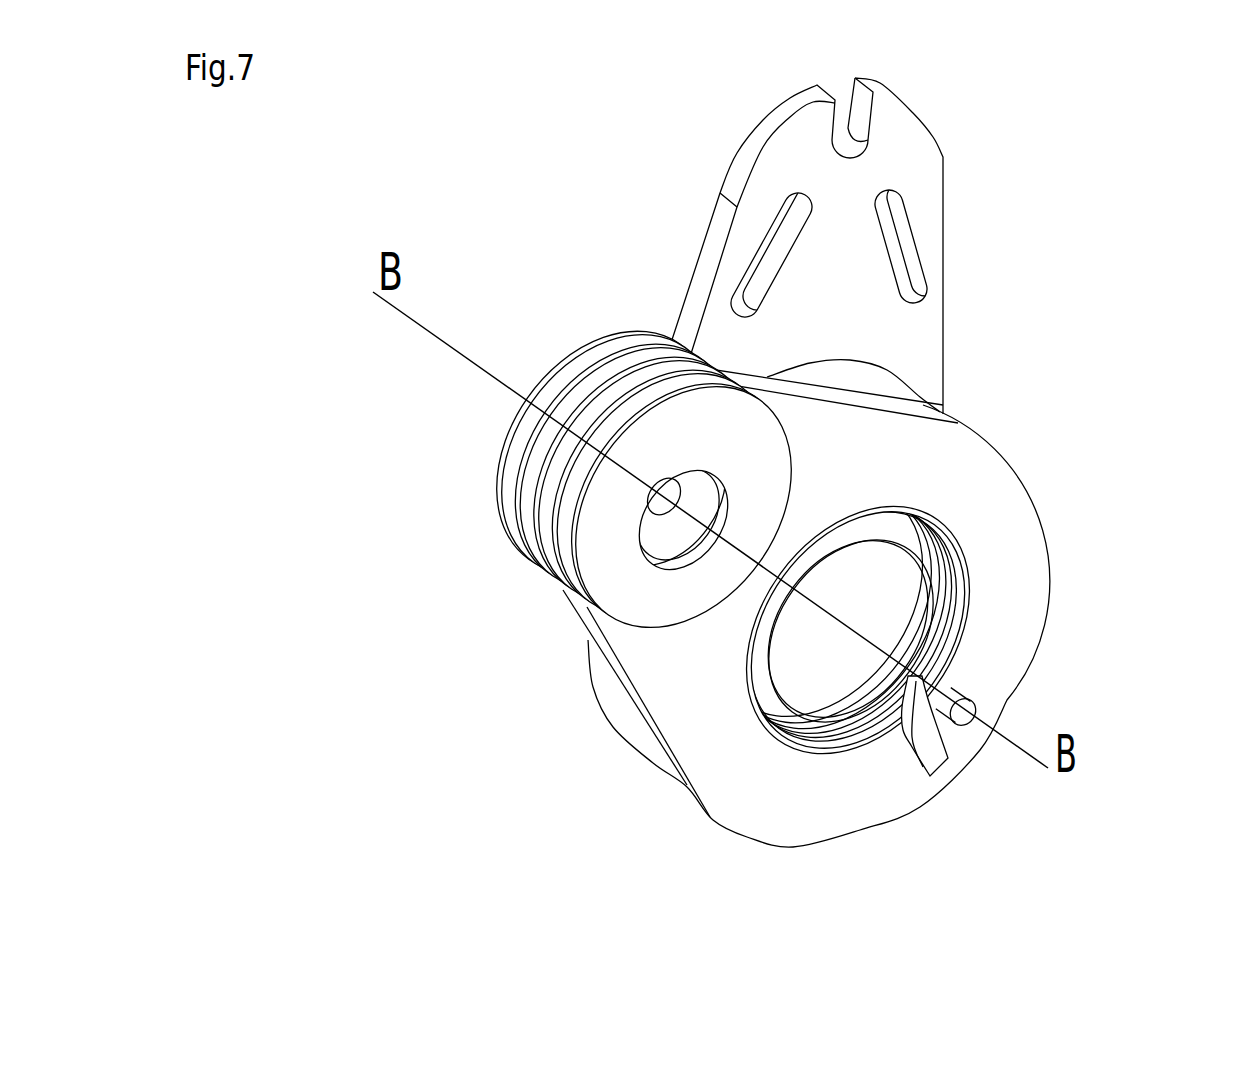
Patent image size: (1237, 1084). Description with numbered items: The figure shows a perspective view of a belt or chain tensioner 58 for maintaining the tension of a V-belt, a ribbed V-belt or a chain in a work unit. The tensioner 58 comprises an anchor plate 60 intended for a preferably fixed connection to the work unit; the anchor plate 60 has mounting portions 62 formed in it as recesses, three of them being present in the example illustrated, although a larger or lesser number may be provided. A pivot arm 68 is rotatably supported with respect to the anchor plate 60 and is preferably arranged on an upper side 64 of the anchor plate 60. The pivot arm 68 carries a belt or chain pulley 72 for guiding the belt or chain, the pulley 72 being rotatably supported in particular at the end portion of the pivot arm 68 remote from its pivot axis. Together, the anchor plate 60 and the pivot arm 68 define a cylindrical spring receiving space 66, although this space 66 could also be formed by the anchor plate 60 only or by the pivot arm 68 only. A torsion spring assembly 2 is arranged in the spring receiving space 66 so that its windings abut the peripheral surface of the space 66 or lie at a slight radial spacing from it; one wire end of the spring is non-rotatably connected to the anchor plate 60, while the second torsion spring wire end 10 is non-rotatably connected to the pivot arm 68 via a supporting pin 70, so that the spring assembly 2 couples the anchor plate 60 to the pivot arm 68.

The belt or chain tensioner 58 is at (545, 225).
The anchor plate 60 is at (877, 340).
The mounting portions 62 is at (855, 135).
The upper side 64 is at (863, 263).
The spring receiving space 66 is at (873, 613).
The pivot arm 68 is at (670, 700).
The supporting pin 70 is at (975, 708).
The belt or chain pulley 72 is at (578, 470).
The second torsion spring wire end 10 is at (930, 753).
The torsion spring assembly 2 is at (866, 733).